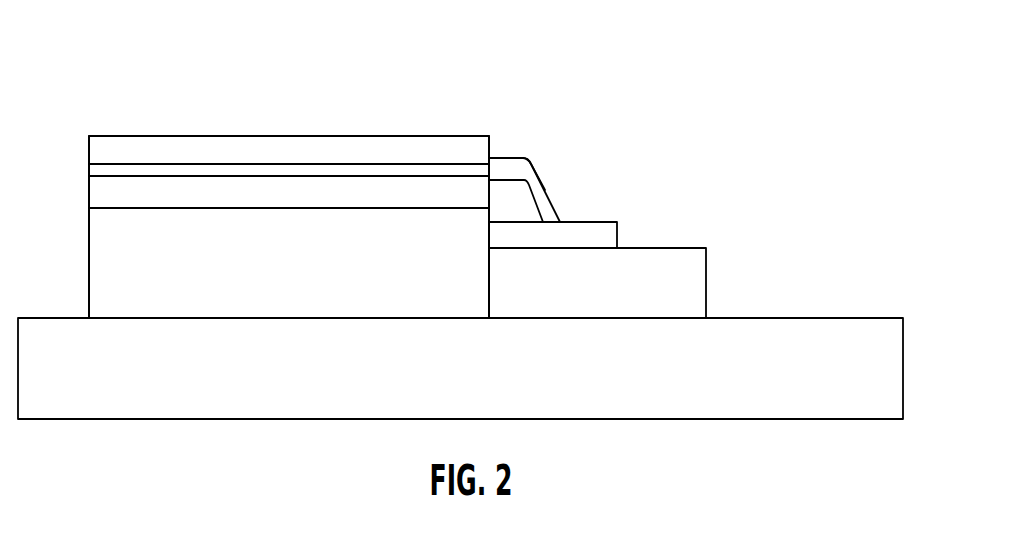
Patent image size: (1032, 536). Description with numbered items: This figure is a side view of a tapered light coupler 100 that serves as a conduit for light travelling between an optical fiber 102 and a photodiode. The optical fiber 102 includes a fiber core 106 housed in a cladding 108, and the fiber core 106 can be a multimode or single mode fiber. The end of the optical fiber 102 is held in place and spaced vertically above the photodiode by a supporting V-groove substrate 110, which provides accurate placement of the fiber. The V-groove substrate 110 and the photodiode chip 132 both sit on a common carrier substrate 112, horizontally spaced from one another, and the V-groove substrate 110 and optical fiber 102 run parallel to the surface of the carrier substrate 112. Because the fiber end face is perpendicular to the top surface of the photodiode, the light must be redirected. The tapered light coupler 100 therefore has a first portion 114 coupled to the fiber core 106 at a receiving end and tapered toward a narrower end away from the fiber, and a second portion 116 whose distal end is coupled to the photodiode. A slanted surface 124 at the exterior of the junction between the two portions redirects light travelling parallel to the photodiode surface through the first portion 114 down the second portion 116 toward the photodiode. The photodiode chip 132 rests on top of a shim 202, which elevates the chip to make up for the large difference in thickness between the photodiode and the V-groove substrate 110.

The tapered light coupler 100 is at (477, 217).
The optical fiber 102 is at (259, 167).
The fiber core 106 is at (88, 172).
The cladding 108 is at (175, 143).
The V-groove substrate 110 is at (88, 230).
The carrier substrate 112 is at (905, 347).
The first portion 114 is at (500, 157).
The second portion 116 is at (547, 190).
The slanted surface 124 is at (533, 159).
The photodiode chip 132 is at (618, 232).
The shim 202 is at (707, 270).